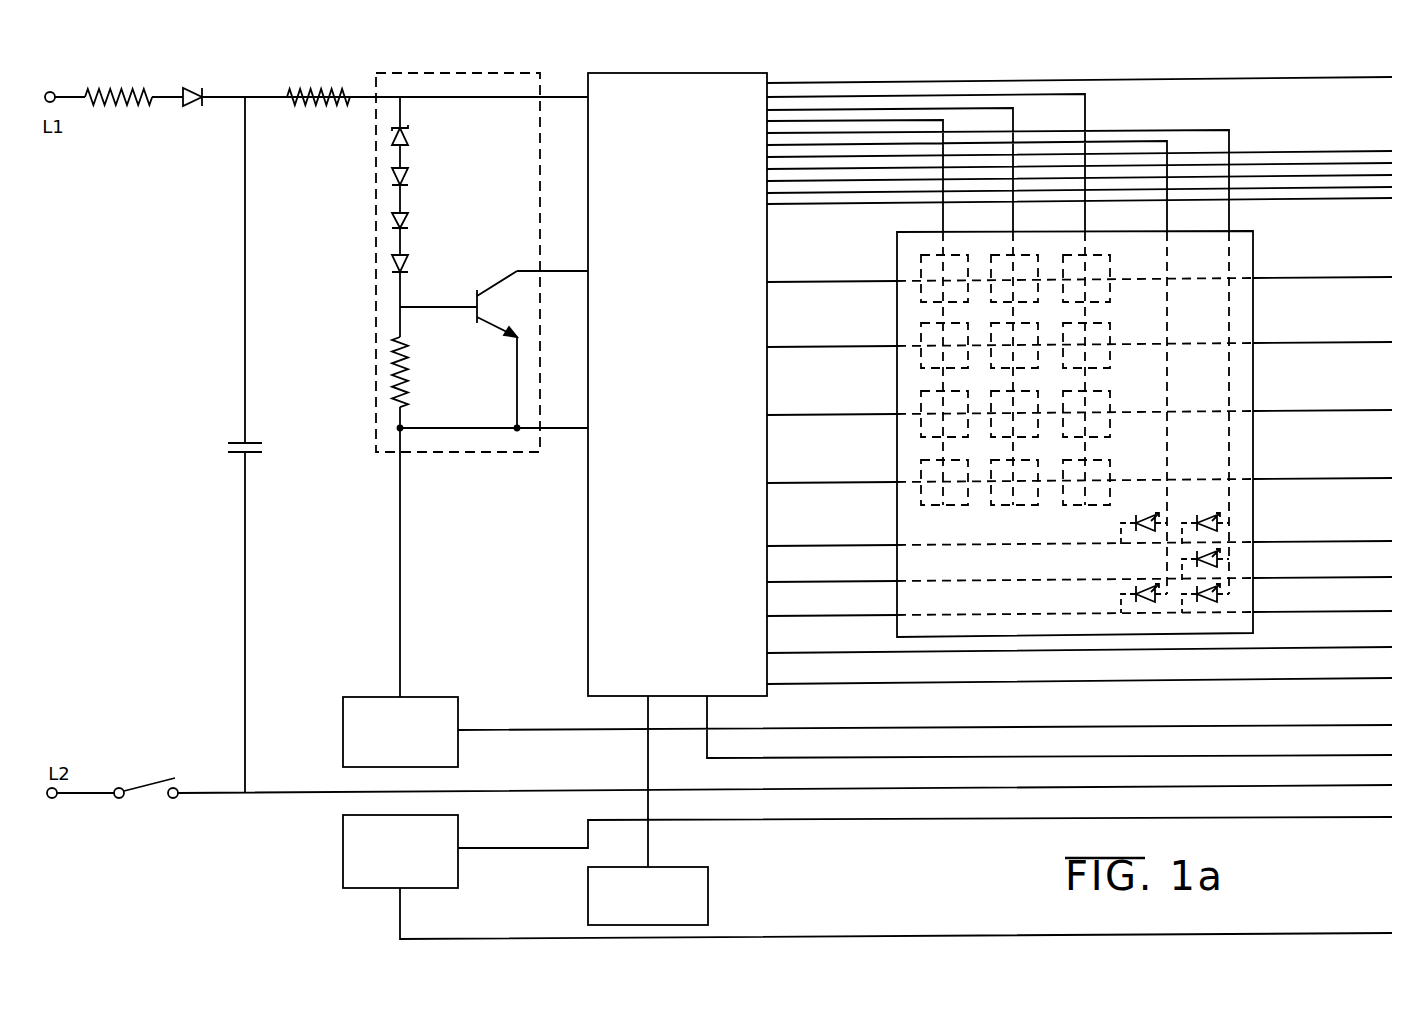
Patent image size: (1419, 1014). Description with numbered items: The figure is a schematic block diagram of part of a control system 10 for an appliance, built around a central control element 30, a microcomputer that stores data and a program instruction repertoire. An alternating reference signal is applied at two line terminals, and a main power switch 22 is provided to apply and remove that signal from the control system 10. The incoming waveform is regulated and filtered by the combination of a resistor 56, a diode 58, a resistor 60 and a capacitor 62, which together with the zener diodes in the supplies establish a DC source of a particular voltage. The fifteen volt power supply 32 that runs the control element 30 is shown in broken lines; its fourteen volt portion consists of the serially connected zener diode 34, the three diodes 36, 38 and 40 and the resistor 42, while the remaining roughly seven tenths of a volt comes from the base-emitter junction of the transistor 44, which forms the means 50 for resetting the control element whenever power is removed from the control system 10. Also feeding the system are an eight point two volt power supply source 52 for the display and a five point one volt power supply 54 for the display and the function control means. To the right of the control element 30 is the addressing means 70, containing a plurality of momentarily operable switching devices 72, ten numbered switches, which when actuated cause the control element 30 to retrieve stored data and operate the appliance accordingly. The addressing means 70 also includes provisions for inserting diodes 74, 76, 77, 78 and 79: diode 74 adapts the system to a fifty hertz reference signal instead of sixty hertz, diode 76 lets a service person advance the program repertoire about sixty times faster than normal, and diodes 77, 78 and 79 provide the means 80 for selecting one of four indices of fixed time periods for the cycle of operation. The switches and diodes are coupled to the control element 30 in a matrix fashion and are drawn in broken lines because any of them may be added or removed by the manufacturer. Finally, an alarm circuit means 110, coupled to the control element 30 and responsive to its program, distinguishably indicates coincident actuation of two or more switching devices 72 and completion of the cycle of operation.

The control system 10 is at (1246, 60).
The main power switch 22 is at (148, 784).
The central control element 30 is at (762, 74).
The 15 volt power supply 32 is at (536, 73).
The zener diode 34 is at (408, 137).
The diode 36 is at (408, 178).
The diode 38 is at (408, 221).
The diode 40 is at (408, 262).
The resistor 42 is at (408, 374).
The transistor 44 is at (474, 298).
The means for resetting the control element 50 is at (521, 266).
The 8.2 volt power supply source 52 is at (422, 697).
The 5.1 volt power supply 54 is at (459, 833).
The resistor 56 is at (143, 104).
The diode 58 is at (193, 104).
The resistor 60 is at (296, 104).
The capacitor 62 is at (263, 447).
The addressing means 70 is at (1256, 241).
The momentarily operable switching devices 72 is at (906, 249).
The diode 74 is at (1150, 516).
The diode 76 is at (1138, 583).
The diode 77 is at (1211, 516).
The diode 78 is at (1218, 565).
The diode 79 is at (1218, 598).
The means for selecting an index of fixed time periods 80 is at (1246, 514).
The alarm circuit means 110 is at (708, 898).